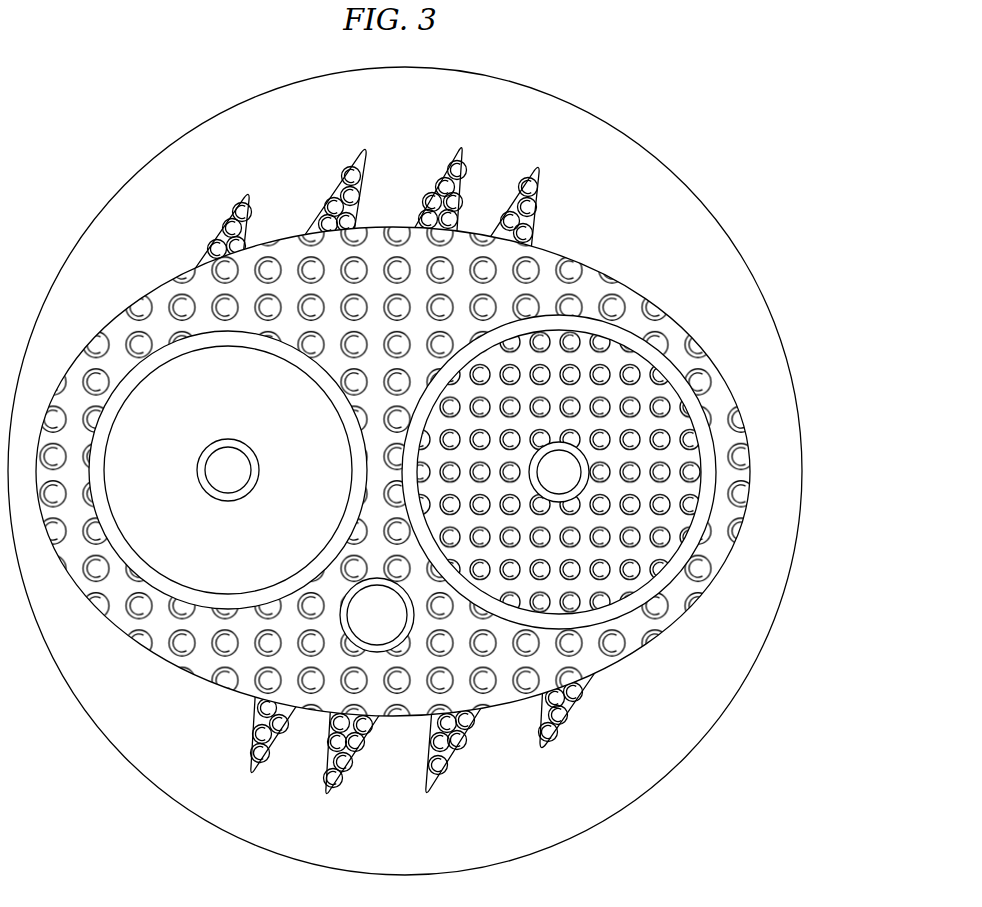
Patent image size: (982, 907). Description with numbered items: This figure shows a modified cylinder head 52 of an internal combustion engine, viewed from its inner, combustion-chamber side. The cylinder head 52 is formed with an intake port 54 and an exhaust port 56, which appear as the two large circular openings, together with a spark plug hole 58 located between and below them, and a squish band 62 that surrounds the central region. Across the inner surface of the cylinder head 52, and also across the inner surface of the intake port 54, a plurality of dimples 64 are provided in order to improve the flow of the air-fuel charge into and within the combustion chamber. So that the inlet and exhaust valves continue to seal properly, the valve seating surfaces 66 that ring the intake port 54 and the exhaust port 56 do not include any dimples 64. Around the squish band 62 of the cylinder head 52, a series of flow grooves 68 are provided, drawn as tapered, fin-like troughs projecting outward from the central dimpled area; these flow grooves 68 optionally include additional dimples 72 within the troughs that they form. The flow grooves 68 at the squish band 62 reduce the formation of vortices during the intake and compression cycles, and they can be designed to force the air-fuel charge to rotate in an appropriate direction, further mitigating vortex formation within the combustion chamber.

The cylinder head 52 is at (690, 127).
The intake port 54 is at (612, 357).
The exhaust port 56 is at (160, 545).
The spark plug hole 58 is at (373, 620).
The squish band 62 is at (567, 170).
The dimples 64 is at (520, 268).
The valve seating surfaces 66 is at (163, 583).
The flow grooves 68 is at (337, 180).
The additional dimples 72 is at (447, 163).